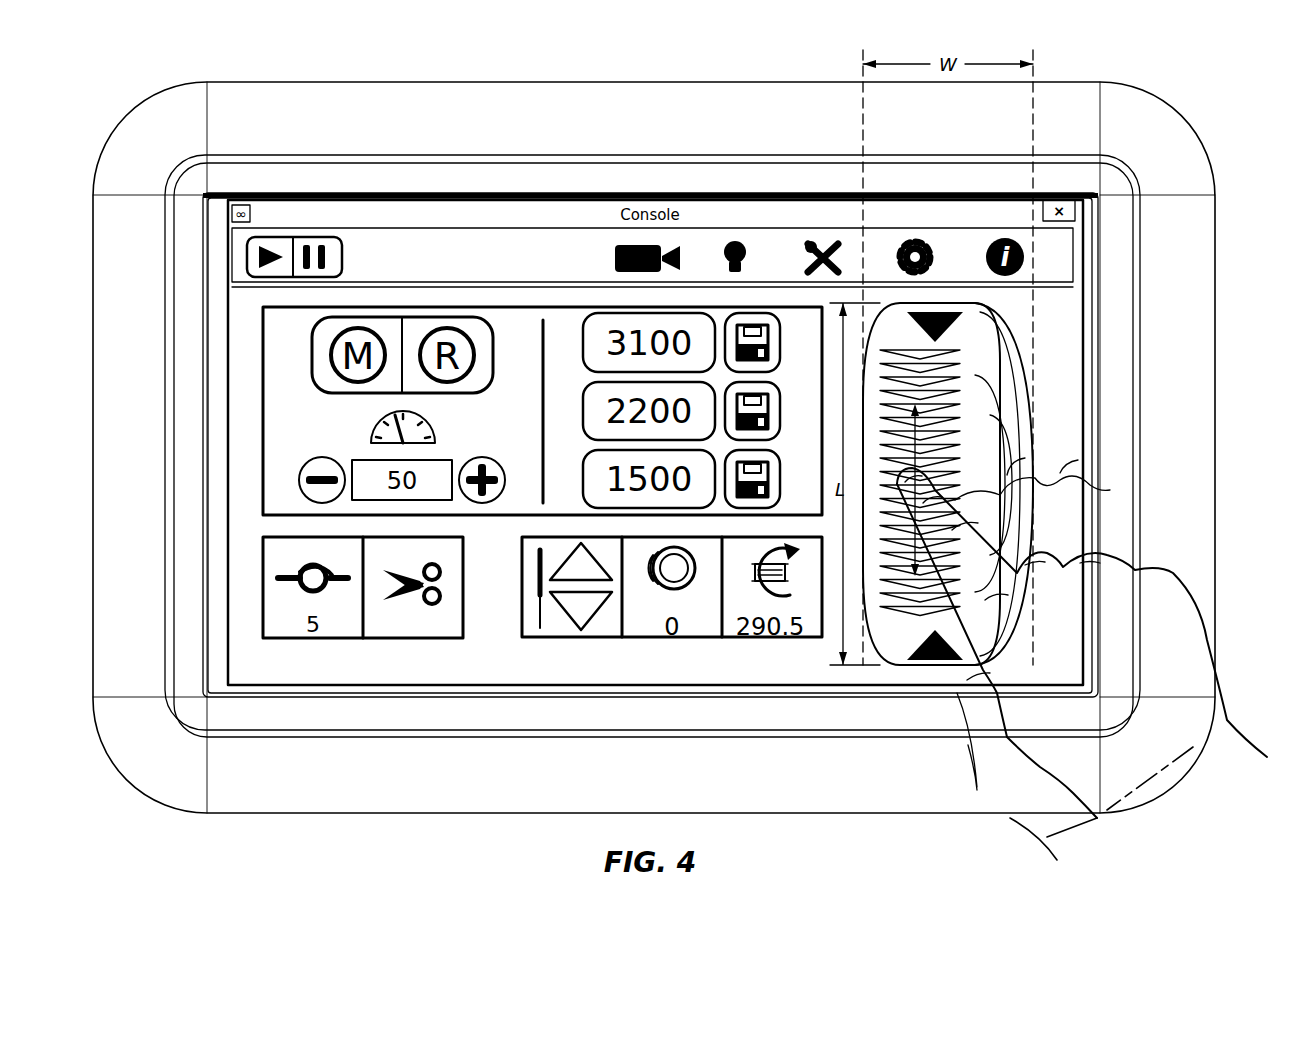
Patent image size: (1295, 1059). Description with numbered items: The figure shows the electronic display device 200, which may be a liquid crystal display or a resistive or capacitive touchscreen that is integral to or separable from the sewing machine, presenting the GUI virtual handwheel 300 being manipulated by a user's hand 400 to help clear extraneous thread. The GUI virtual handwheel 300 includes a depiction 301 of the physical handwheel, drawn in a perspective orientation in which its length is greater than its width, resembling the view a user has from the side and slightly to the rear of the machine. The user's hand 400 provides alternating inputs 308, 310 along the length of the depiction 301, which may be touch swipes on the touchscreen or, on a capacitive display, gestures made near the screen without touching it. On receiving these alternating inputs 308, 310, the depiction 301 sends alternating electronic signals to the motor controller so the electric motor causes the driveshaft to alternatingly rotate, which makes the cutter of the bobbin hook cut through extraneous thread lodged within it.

The electronic display device 200 is at (278, 90).
The GUI virtual handwheel 300 is at (986, 519).
The depiction of the physical handwheel 301 is at (885, 648).
The alternating input 308 is at (945, 450).
The alternating input 310 is at (887, 542).
The user's hand 400 is at (1190, 597).